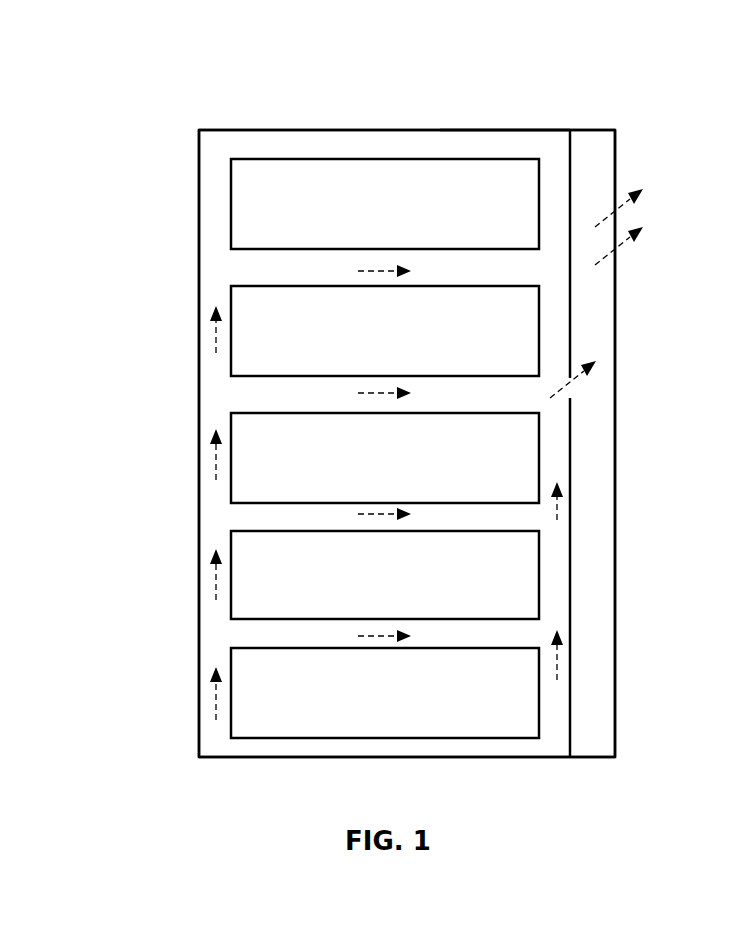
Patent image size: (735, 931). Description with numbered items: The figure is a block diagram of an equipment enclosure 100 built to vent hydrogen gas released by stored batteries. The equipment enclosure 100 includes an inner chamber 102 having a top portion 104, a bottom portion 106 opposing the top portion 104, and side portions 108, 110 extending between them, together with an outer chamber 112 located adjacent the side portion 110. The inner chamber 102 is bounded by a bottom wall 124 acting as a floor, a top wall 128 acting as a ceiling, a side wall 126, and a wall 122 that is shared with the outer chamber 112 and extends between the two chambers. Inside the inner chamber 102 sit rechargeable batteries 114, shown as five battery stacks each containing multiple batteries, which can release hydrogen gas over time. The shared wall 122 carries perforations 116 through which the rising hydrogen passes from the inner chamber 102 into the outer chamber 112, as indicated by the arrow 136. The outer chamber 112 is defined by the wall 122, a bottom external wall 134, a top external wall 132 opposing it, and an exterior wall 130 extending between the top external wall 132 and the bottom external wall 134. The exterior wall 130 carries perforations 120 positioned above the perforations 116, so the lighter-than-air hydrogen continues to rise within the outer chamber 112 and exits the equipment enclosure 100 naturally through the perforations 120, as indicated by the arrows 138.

The equipment enclosure 100 is at (246, 70).
The inner chamber 102 is at (300, 143).
The top portion 104 is at (404, 138).
The bottom portion 106 is at (331, 766).
The side portion 108 is at (212, 407).
The side portion 110 is at (560, 444).
The outer chamber 112 is at (603, 160).
The rechargeable batteries 114 is at (405, 217).
The perforations 116 is at (573, 397).
The perforations 120 is at (617, 222).
The wall 122 is at (572, 305).
The bottom wall 124 is at (445, 758).
The side wall 126 is at (198, 348).
The top wall 128 is at (490, 130).
The exterior wall 130 is at (615, 343).
The top external wall 132 is at (592, 130).
The bottom external wall 134 is at (592, 758).
The arrow 136 is at (572, 378).
The arrows 138 is at (617, 208).